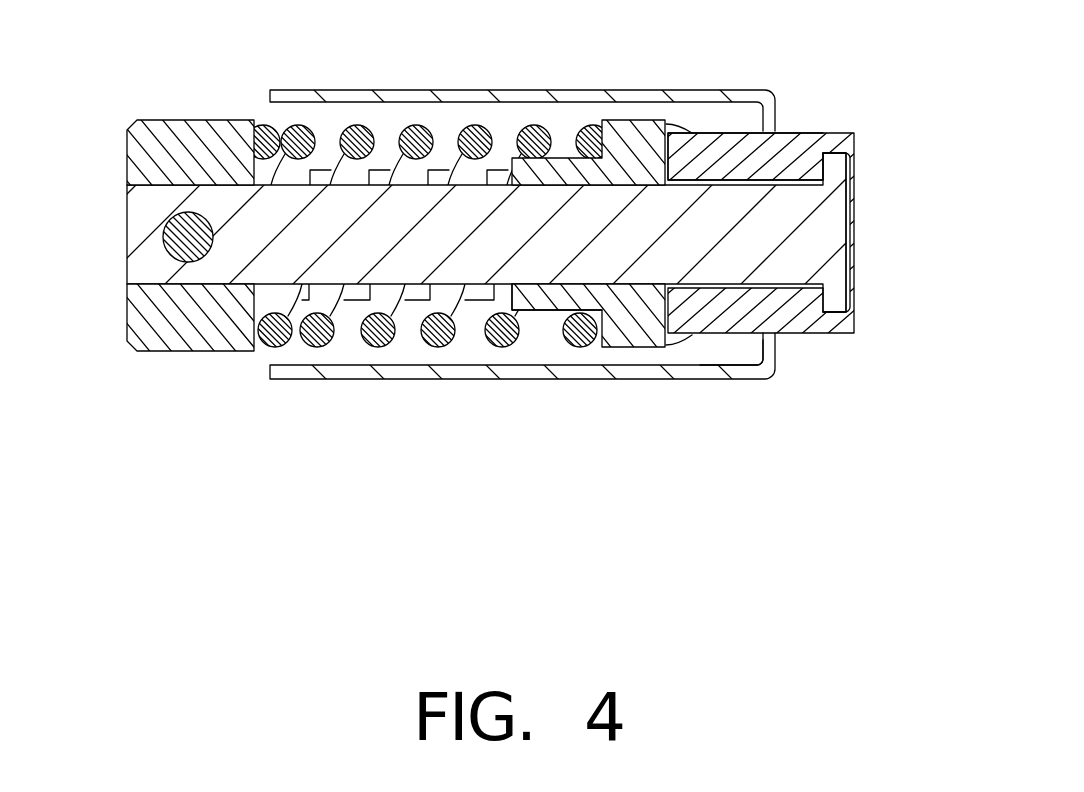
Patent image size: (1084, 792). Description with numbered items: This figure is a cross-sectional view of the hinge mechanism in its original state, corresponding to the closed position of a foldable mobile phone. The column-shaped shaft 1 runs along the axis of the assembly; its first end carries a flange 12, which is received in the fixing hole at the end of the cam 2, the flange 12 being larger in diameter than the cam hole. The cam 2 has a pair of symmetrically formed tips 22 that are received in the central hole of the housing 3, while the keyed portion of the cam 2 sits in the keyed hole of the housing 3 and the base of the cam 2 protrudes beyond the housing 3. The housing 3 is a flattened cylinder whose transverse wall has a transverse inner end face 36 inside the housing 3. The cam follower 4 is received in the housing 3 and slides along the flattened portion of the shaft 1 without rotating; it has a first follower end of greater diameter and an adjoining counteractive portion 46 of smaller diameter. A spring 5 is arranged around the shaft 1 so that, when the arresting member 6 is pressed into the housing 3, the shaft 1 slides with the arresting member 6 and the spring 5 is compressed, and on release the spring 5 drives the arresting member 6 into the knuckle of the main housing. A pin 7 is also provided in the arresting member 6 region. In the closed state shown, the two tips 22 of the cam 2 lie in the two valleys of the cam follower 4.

The shaft 1 is at (808, 237).
The flange 12 is at (835, 298).
The cam 2 is at (800, 147).
The tips 22 is at (705, 155).
The housing 3 is at (733, 97).
The transverse inner end face 36 is at (752, 343).
The cam follower 4 is at (633, 147).
The counteractive portion 46 is at (548, 288).
The spring 5 is at (488, 123).
The arresting member 6 is at (187, 145).
The pin 7 is at (173, 222).